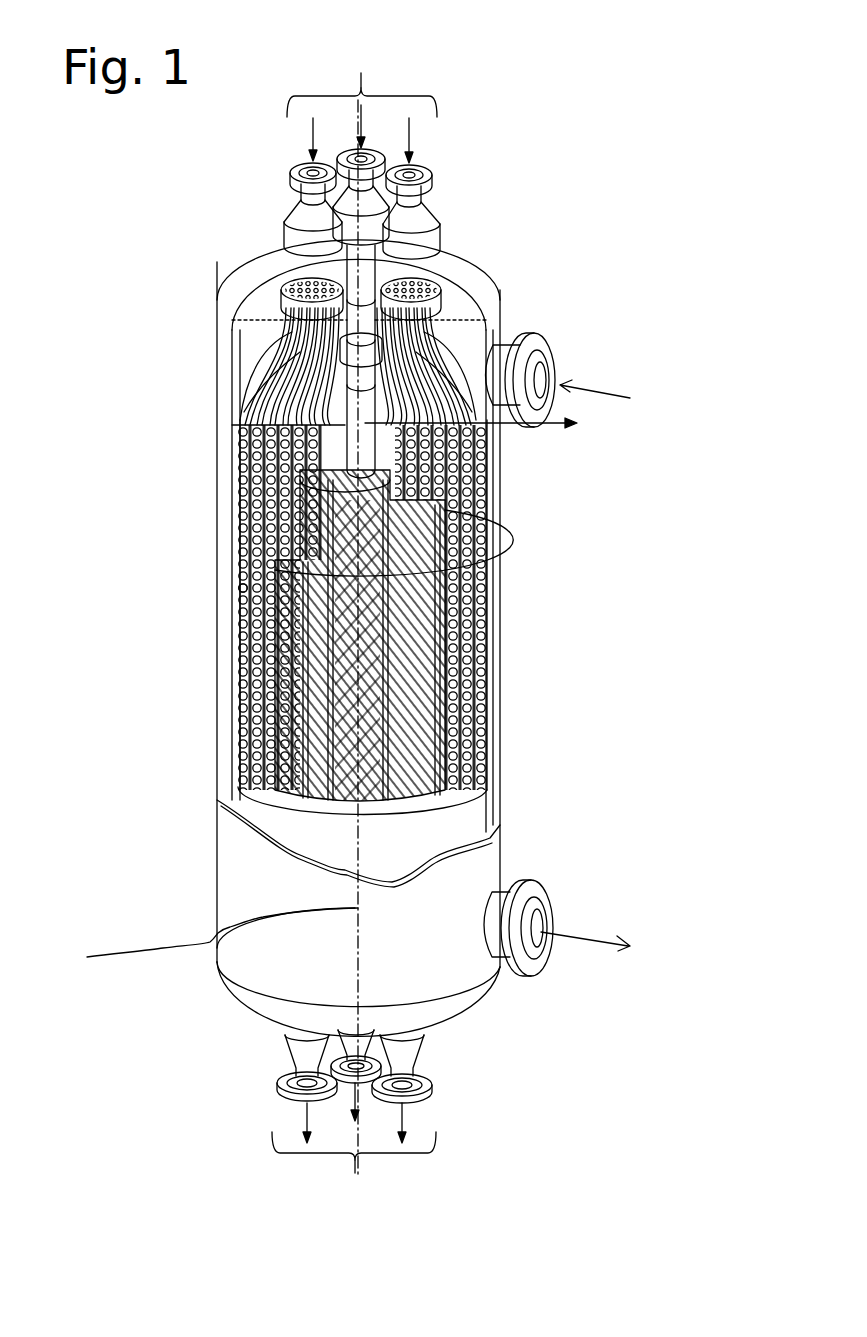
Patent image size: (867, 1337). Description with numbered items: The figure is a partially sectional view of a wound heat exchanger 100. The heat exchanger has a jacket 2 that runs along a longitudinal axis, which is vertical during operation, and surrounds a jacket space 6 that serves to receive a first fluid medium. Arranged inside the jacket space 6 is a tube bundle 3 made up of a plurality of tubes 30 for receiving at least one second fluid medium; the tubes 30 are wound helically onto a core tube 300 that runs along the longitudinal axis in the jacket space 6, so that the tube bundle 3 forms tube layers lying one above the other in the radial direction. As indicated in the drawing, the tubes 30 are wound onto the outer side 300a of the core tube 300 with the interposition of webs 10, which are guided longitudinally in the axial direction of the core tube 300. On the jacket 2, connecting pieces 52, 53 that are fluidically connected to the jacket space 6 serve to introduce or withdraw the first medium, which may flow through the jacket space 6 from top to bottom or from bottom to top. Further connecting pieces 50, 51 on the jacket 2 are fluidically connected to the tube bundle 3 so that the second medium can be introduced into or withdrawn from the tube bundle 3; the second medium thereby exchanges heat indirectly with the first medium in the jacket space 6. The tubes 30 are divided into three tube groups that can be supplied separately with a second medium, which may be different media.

The wound heat exchanger 100 is at (551, 198).
The jacket 2 is at (485, 838).
The tube bundle 3 is at (224, 543).
The tubes 30 is at (242, 588).
The webs 10 is at (460, 710).
The core tube 300 is at (350, 317).
The outer side of the core tube 300a is at (455, 293).
The jacket space 6 is at (300, 320).
The connecting pieces 50 is at (347, 193).
The connecting pieces 51 is at (300, 1042).
The connecting piece 52 is at (512, 905).
The connecting piece 53 is at (512, 345).